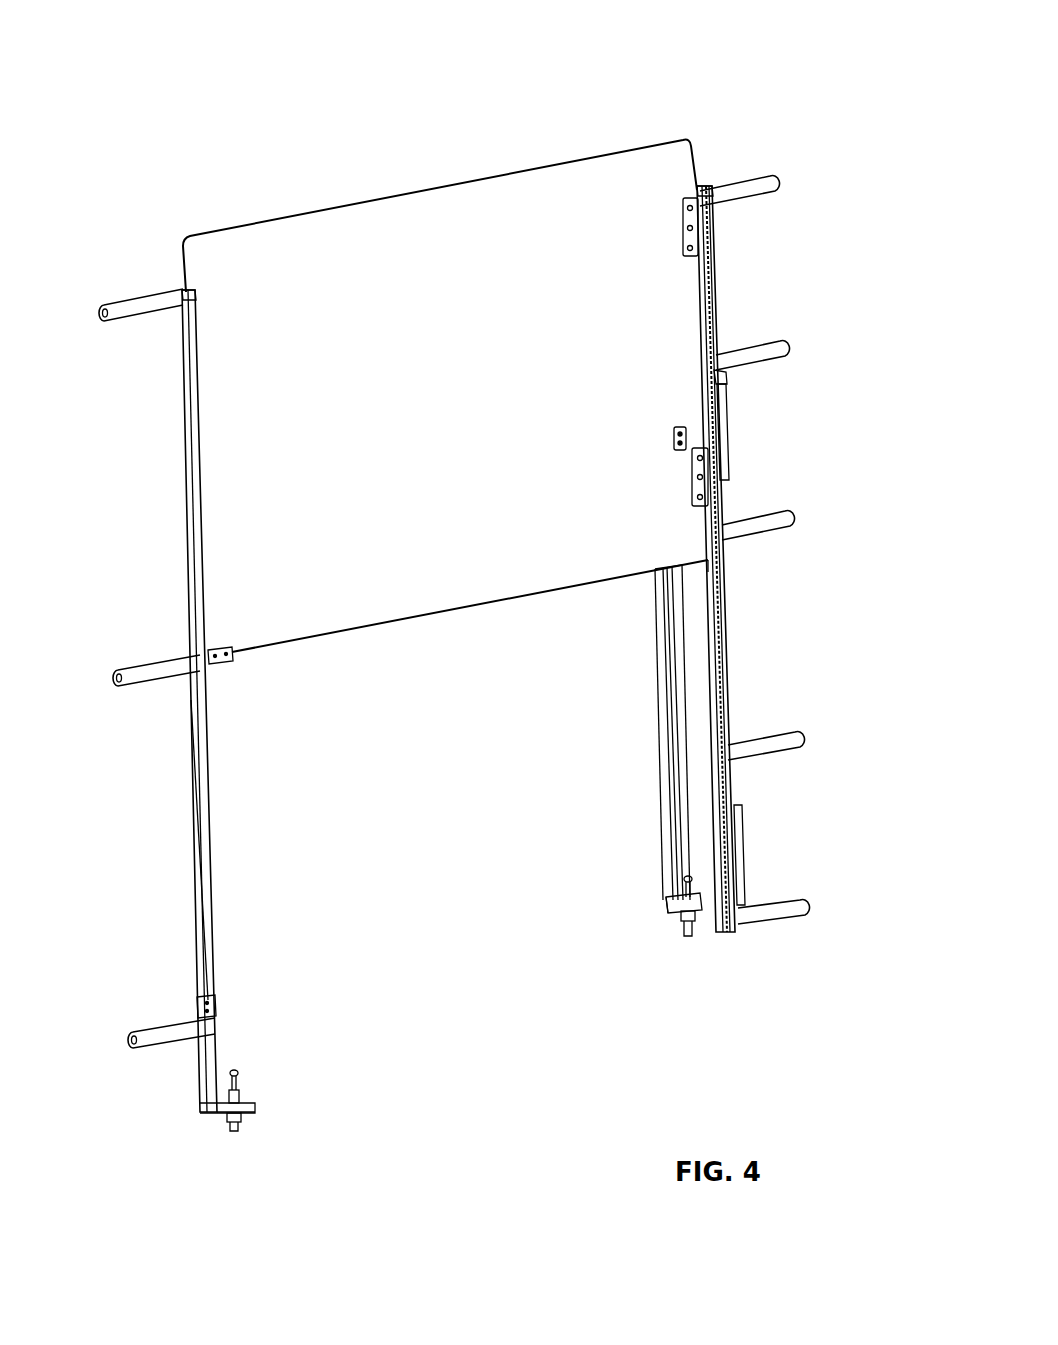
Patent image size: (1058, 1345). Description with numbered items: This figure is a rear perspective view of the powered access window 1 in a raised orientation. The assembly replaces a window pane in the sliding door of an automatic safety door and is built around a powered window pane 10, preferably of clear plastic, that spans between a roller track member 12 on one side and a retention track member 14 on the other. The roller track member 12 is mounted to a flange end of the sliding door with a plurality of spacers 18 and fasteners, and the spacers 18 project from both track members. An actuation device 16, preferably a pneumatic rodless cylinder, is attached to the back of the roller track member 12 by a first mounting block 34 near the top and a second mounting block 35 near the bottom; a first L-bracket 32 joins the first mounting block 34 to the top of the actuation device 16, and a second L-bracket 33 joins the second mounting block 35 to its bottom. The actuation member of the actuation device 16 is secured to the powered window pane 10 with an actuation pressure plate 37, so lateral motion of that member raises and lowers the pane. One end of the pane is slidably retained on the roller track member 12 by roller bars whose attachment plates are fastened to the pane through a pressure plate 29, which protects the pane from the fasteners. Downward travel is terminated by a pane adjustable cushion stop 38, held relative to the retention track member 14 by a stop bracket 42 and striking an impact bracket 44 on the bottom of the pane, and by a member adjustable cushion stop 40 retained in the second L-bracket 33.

The powered access window 1 is at (470, 1108).
The powered window pane 10 is at (437, 187).
The roller track member 12 is at (722, 655).
The retention track member 14 is at (205, 862).
The actuation device 16 is at (668, 712).
The spacers 18 is at (757, 165).
The pressure plate 29 is at (700, 232).
The first L-bracket 32 is at (718, 377).
The second L-bracket 33 is at (670, 905).
The first mounting block 34 is at (726, 458).
The second mounting block 35 is at (745, 857).
The actuation pressure plate 37 is at (680, 426).
The pane adjustable cushion stop 38 is at (242, 1095).
The member adjustable cushion stop 40 is at (674, 917).
The stop bracket 42 is at (205, 1098).
The impact bracket 44 is at (222, 664).